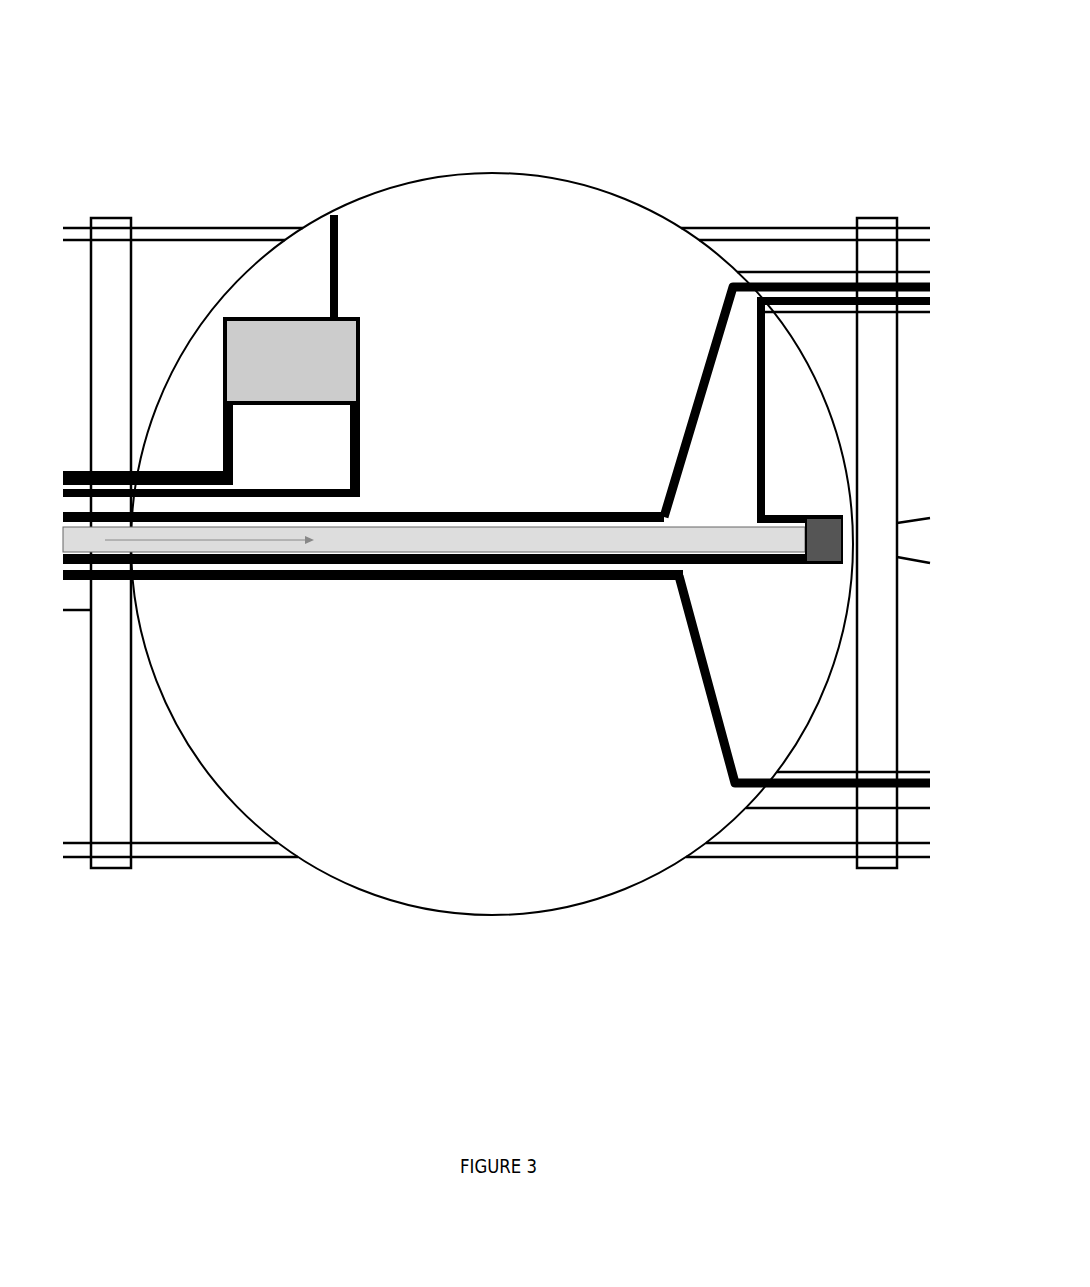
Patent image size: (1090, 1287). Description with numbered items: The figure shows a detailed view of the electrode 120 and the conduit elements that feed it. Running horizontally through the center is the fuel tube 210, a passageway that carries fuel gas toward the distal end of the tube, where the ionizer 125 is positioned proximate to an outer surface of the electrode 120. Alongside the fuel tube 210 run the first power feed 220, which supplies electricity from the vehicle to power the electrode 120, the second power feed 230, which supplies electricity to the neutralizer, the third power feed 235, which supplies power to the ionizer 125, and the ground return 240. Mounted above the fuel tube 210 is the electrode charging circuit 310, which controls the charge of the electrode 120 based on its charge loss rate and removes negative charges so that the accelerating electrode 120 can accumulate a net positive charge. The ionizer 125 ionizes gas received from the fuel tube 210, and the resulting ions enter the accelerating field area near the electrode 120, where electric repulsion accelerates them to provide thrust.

The electrode 120 is at (176, 84).
The ionizer 125 is at (838, 527).
The fuel tube 210 is at (468, 532).
The first power feed 220 is at (227, 453).
The second power feed 230 is at (408, 512).
The third power feed 235 is at (512, 562).
The ground return 240 is at (698, 648).
The electrode charging circuit 310 is at (280, 370).